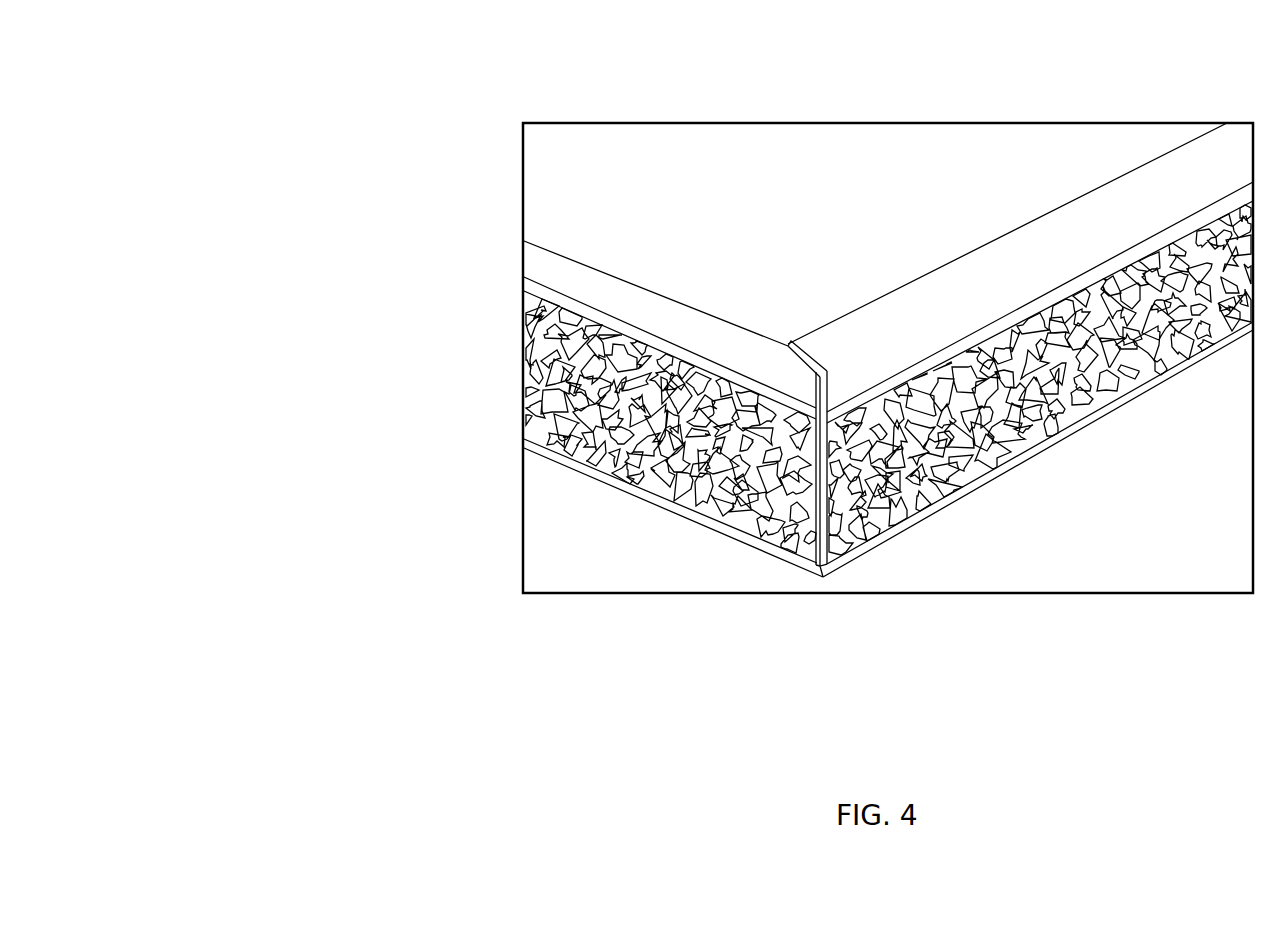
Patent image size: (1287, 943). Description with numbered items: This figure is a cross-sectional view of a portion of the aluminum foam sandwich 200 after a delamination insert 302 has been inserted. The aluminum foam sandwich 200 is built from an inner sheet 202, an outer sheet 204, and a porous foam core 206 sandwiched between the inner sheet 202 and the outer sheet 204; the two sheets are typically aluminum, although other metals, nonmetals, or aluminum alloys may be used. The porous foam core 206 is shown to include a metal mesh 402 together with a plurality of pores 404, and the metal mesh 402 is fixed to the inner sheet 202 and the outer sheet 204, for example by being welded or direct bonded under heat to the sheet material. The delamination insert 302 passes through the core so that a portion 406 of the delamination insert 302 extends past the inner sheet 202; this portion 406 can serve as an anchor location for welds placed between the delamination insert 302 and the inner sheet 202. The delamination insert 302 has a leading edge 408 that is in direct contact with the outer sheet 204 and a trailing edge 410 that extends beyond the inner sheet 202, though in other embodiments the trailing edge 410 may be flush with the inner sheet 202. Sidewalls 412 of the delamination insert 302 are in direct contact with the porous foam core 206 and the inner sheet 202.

The aluminum foam sandwich 200 is at (307, 58).
The inner sheet 202 is at (962, 292).
The outer sheet 204 is at (1068, 440).
The porous foam core 206 is at (524, 352).
The delamination insert 302 is at (827, 412).
The metal mesh 402 is at (1003, 452).
The plurality of pores 404 is at (762, 500).
The portion of the delamination insert 406 is at (808, 374).
The leading edge 408 is at (823, 578).
The trailing edge 410 is at (788, 345).
The sidewalls 412 is at (805, 538).